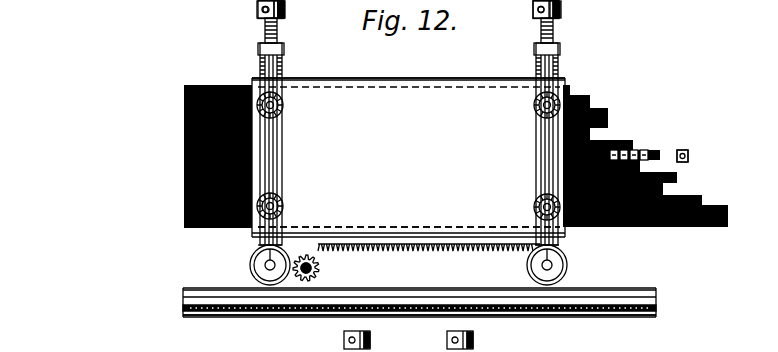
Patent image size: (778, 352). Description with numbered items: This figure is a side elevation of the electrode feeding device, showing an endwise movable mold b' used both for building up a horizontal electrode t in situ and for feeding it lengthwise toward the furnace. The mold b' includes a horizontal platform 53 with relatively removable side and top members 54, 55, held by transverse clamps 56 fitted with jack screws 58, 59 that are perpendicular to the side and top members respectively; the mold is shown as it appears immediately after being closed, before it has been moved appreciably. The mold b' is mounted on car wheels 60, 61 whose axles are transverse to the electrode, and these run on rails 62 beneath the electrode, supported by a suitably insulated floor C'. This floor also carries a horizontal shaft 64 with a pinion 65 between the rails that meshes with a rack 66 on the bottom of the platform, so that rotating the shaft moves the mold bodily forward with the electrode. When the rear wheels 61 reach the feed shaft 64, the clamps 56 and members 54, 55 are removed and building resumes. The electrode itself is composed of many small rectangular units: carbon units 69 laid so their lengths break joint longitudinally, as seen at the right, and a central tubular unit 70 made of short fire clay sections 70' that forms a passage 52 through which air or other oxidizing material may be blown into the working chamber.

The passage 52 is at (690, 156).
The horizontal platform 53 is at (405, 235).
The side member 54 is at (408, 157).
The top member 55 is at (470, 78).
The transverse clamp 56 is at (284, 70).
The jack screw 58 is at (284, 105).
The jack screw 59 is at (447, 340).
The car wheel 60 is at (252, 262).
The car wheel 61 is at (557, 263).
The rail 62 is at (637, 287).
The horizontal shaft 64 is at (306, 274).
The pinion 65 is at (320, 268).
The rack 66 is at (452, 246).
The carbon unit 69 is at (590, 100).
The central tubular unit 70 is at (643, 143).
The tubular unit section 70' is at (700, 170).
The endwise movable mold b' is at (409, 60).
The horizontal electrode t is at (170, 152).
The insulated floor C' is at (419, 333).